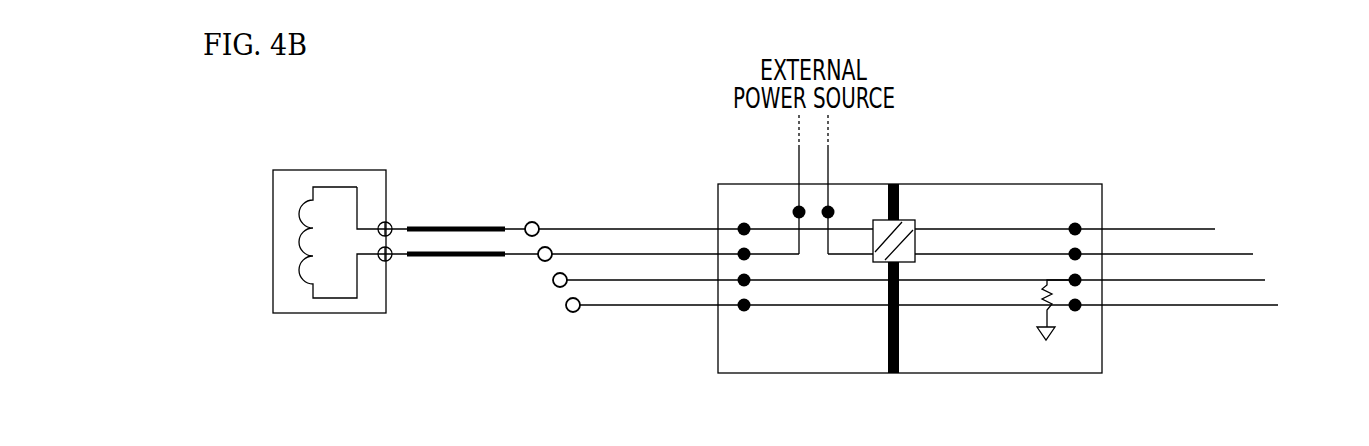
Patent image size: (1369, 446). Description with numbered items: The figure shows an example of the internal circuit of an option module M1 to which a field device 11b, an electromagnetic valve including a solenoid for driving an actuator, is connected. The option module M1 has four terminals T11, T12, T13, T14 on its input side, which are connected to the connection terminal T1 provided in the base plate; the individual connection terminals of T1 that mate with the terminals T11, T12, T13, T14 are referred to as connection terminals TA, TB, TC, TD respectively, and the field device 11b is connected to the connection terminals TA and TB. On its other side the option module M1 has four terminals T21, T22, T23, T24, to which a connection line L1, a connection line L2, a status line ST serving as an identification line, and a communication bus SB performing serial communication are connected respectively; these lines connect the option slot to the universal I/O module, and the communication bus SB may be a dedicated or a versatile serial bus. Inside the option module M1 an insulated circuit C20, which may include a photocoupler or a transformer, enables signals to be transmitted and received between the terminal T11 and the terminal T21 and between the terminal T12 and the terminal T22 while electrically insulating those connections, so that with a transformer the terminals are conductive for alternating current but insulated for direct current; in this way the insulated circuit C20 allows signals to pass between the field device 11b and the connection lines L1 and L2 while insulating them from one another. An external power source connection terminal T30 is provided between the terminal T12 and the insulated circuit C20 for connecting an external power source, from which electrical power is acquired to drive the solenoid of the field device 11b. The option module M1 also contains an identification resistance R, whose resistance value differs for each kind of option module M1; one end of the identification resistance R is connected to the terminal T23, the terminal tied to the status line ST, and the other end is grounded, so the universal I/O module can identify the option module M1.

The field device 11b is at (362, 171).
The connection terminal T1 is at (482, 330).
The connection terminal TA is at (537, 224).
The connection terminal TB is at (540, 259).
The connection terminal TC is at (555, 285).
The connection terminal TD is at (568, 311).
The option module M1 is at (1014, 168).
The insulated circuit C20 is at (910, 263).
The terminal T11 is at (745, 222).
The terminal T12 is at (750, 258).
The terminal T13 is at (750, 284).
The terminal T14 is at (746, 312).
The external power source connection terminal T30 is at (797, 206).
The terminal T21 is at (1080, 226).
The terminal T22 is at (1080, 252).
The terminal T23 is at (1070, 277).
The terminal T24 is at (1080, 309).
The identification resistance R is at (1037, 307).
The connection line L1 is at (1185, 229).
The connection line L2 is at (1213, 254).
The status line ST is at (1233, 280).
The communication bus SB is at (1258, 305).